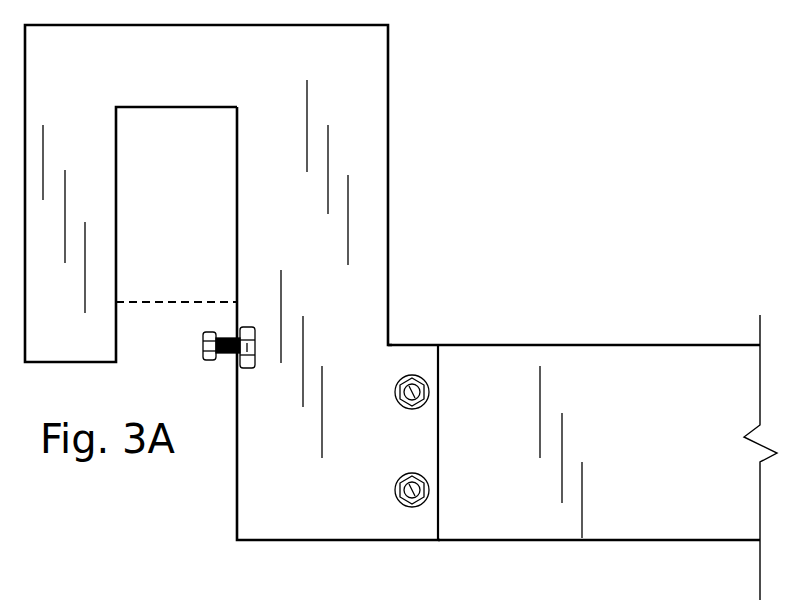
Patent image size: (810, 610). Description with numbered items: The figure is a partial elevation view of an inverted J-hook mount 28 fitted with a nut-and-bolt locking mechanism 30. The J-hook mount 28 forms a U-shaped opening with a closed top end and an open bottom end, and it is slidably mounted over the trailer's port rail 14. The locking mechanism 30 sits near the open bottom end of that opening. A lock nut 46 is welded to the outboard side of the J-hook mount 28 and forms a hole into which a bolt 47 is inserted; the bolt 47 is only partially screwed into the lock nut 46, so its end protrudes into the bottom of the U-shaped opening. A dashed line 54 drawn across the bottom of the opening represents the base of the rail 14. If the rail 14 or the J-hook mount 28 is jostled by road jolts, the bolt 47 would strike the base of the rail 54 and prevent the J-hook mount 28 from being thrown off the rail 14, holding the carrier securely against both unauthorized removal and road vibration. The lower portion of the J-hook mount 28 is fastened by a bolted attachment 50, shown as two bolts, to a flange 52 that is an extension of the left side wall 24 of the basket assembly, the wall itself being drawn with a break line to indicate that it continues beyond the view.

The port rail 14 is at (169, 130).
The left side wall of basket assembly 24 is at (683, 463).
The inverted J-hook mount 28 is at (370, 87).
The locking mechanism 30 is at (255, 390).
The lock nut 46 is at (252, 326).
The bolt 47 is at (201, 352).
The bolted attachment 50 is at (428, 388).
The flange 52 is at (411, 353).
The base of rail 54 is at (178, 302).